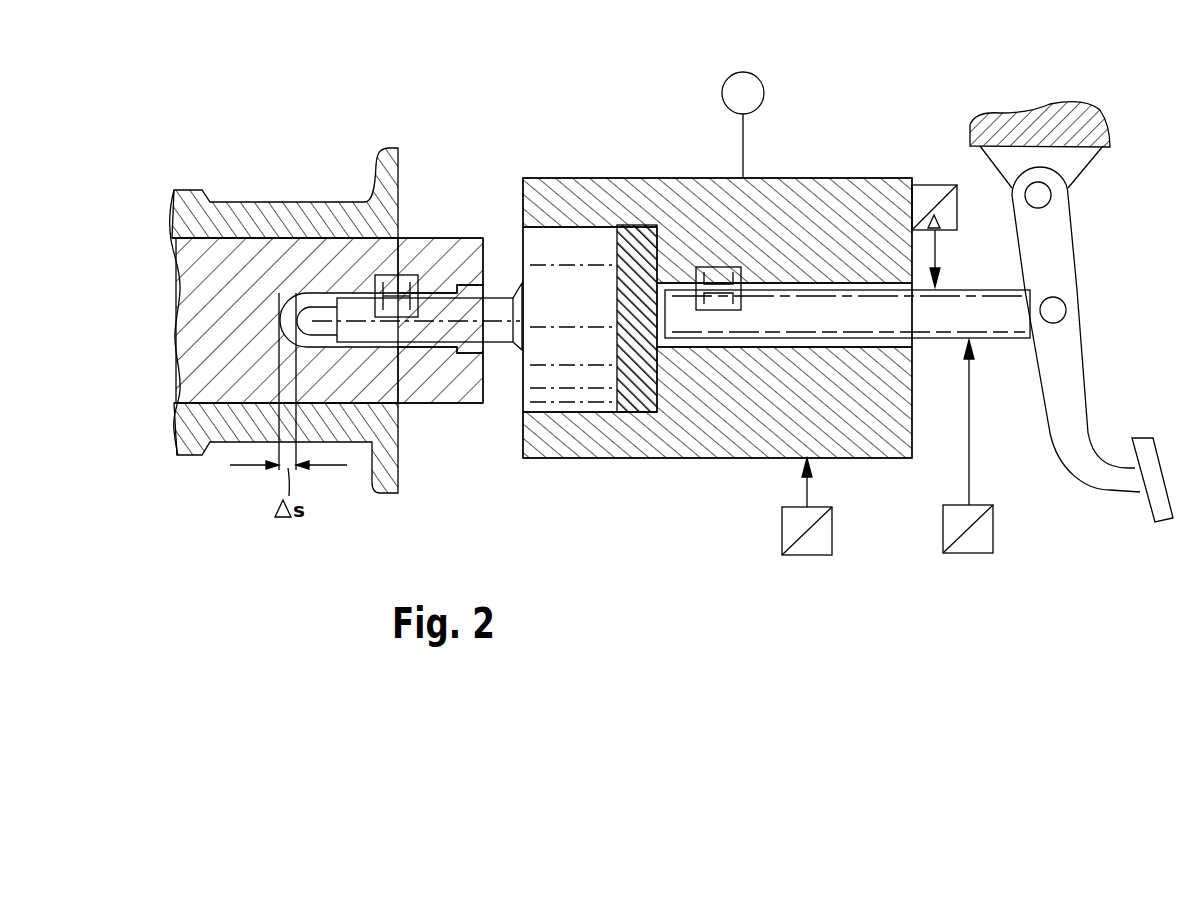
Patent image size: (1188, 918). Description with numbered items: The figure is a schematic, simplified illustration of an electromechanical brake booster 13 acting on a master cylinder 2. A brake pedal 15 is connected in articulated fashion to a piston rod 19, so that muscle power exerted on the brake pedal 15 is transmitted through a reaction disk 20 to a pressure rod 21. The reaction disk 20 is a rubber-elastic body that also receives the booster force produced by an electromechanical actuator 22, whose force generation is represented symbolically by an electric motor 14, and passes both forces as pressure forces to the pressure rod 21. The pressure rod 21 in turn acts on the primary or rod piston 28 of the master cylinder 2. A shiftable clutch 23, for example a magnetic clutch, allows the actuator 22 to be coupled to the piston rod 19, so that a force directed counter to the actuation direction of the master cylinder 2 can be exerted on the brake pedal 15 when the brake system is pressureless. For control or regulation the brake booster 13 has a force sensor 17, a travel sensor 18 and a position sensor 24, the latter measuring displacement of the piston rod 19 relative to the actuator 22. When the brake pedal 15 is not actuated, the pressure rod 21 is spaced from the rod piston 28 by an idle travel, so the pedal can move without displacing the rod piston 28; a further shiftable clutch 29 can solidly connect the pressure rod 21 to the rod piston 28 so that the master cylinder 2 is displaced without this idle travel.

The master cylinder 2 is at (246, 222).
The electromechanical brake booster 13 is at (470, 110).
The electric motor 14 is at (742, 72).
The brake pedal 15 is at (1068, 355).
The force sensor 17 is at (968, 555).
The travel sensor 18 is at (805, 557).
The piston rod 19 is at (768, 310).
The reaction disk 20 is at (643, 397).
The pressure rod 21 is at (430, 318).
The electromechanical actuator 22 is at (850, 190).
The shiftable clutch 23 is at (718, 267).
The position sensor 24 is at (940, 185).
The primary or rod piston 28 is at (440, 258).
The further shiftable clutch 29 is at (393, 285).